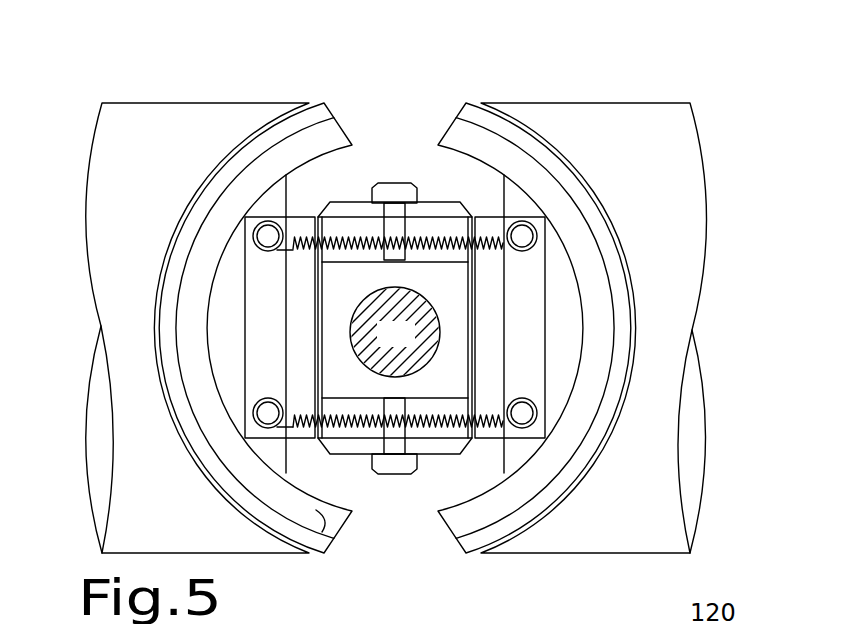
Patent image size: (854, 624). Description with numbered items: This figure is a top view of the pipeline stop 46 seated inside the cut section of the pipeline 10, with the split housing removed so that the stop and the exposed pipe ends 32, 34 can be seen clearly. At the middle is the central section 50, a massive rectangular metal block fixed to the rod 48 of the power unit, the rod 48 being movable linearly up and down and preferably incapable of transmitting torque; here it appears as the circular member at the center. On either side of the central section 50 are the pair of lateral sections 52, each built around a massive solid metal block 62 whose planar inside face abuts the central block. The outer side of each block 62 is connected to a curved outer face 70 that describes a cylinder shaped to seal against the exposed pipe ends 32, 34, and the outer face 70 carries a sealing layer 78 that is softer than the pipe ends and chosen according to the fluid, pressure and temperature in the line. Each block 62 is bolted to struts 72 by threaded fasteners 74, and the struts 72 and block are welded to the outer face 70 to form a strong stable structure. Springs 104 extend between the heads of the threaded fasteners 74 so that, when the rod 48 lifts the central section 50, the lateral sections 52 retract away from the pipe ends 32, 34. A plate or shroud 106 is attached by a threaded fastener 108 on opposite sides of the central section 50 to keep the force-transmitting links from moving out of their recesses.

The pipeline 10 is at (104, 228).
The exposed pipe end 32 is at (210, 465).
The exposed pipe end 34 is at (557, 502).
The pipeline stop 46 is at (341, 88).
The rod 48 is at (412, 346).
The central section 50 is at (434, 197).
The lateral section 52 is at (383, 312).
The block 62 is at (262, 308).
The curved outer face 70 is at (300, 545).
The strut 72 is at (528, 314).
The threaded fastener 74 is at (523, 236).
The sealing layer 78 is at (243, 497).
The spring 104 is at (356, 244).
The plate or shroud 106 is at (443, 452).
The threaded fastener 108 is at (402, 474).